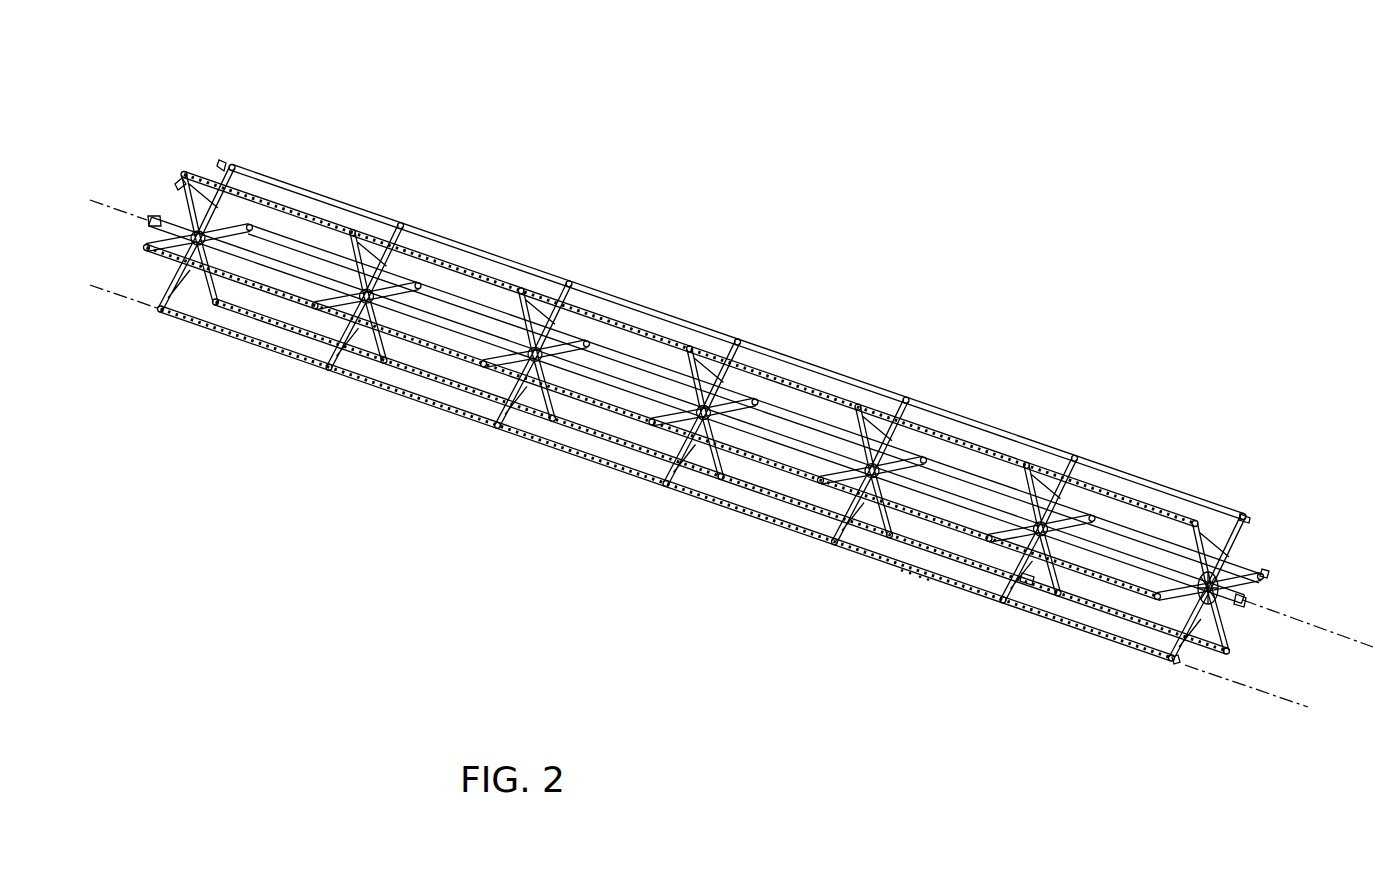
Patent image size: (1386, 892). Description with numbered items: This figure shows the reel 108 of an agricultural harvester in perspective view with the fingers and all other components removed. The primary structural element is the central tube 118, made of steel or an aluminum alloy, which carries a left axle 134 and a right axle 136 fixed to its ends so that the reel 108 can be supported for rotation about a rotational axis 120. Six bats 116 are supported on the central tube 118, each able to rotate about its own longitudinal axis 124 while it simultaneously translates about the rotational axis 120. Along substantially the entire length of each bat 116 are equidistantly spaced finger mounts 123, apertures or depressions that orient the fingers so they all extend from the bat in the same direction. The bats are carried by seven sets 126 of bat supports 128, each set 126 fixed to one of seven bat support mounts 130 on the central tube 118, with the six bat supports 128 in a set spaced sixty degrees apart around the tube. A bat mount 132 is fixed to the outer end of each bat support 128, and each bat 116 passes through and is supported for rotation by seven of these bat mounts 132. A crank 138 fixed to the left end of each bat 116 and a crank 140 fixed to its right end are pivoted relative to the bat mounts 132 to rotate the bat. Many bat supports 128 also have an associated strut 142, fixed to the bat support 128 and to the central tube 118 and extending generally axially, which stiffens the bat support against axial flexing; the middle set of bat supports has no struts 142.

The reel 108 is at (750, 87).
The bat 116 is at (807, 420).
The central tube 118 is at (623, 372).
The rotational axis 120 is at (1325, 625).
The finger mount 123 is at (928, 572).
The longitudinal axis 124 is at (1230, 680).
The set of bat supports 126 is at (783, 297).
The bat support 128 is at (357, 232).
The bat support mount 130 is at (662, 400).
The bat mount 132 is at (577, 283).
The left axle 134 is at (1232, 603).
The right axle 136 is at (173, 222).
The crank 138 is at (1265, 572).
The crank 140 is at (222, 167).
The strut 142 is at (1027, 580).